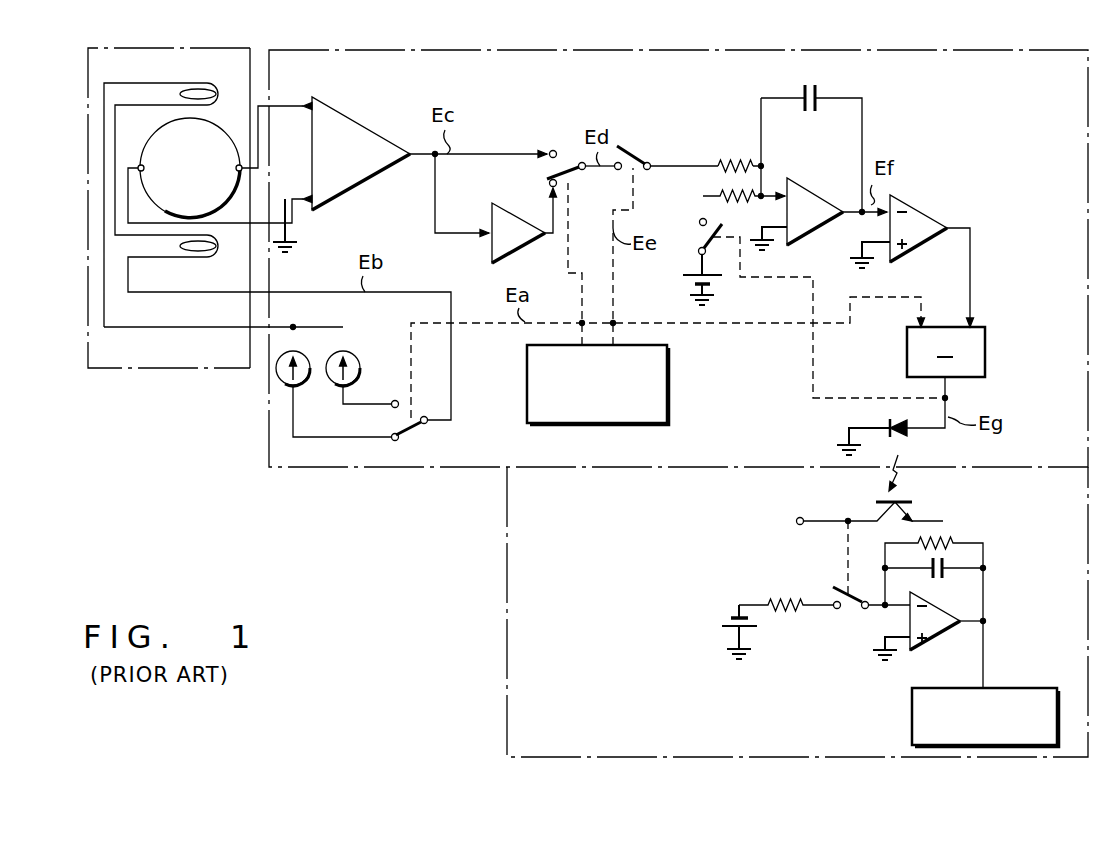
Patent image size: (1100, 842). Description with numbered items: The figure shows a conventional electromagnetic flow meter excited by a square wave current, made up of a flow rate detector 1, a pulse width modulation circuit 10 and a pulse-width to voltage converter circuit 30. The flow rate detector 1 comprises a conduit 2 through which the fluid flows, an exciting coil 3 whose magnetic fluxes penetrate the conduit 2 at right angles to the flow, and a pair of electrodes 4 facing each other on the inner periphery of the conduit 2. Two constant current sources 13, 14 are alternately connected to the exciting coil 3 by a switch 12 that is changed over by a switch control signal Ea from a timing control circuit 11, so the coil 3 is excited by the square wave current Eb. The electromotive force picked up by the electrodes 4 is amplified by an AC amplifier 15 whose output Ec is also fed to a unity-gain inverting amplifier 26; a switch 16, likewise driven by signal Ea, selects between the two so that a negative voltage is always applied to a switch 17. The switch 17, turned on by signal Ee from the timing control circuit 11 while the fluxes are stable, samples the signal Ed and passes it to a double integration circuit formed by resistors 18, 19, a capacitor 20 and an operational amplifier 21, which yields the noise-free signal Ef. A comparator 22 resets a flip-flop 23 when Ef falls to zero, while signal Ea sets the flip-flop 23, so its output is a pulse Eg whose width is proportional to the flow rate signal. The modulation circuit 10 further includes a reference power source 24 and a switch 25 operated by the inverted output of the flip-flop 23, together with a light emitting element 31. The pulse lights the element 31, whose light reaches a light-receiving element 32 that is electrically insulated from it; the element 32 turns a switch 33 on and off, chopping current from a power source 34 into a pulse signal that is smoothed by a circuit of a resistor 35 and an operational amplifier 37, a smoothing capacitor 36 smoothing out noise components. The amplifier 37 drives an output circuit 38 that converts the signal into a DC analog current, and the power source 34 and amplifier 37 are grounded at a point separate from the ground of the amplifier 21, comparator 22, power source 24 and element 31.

The flow rate detector 1 is at (195, 369).
The conduit 2 is at (153, 136).
The exciting coil 3 is at (200, 82).
The electrodes 4 is at (234, 169).
The pulse width modulation circuit 10 is at (303, 467).
The timing control circuit 11 is at (652, 405).
The switch 12 is at (408, 438).
The constant current source 13 is at (358, 380).
The constant current source 14 is at (303, 385).
The AC amplifier 15 is at (364, 136).
The switch 16 is at (571, 156).
The switch 17 is at (635, 152).
The resistor 18 is at (735, 159).
The resistor 19 is at (730, 192).
The capacitor 20 is at (814, 82).
The operational amplifier 21 is at (813, 201).
The comparator 22 is at (926, 220).
The flip-flop 23 is at (985, 362).
The reference power source 24 is at (716, 280).
The switch 25 is at (697, 237).
The inverting amplifier 26 is at (510, 222).
The pulse-width to voltage converter circuit 30 is at (505, 591).
The light emitting element 31 is at (910, 438).
The light-receiving element 32 is at (912, 510).
The switch 33 is at (850, 608).
The power source 34 is at (724, 620).
The resistor 35 is at (950, 542).
The smoothing capacitor 36 is at (940, 582).
The operational amplifier 37 is at (935, 625).
The output circuit 38 is at (912, 727).